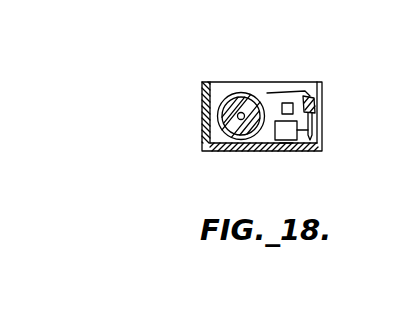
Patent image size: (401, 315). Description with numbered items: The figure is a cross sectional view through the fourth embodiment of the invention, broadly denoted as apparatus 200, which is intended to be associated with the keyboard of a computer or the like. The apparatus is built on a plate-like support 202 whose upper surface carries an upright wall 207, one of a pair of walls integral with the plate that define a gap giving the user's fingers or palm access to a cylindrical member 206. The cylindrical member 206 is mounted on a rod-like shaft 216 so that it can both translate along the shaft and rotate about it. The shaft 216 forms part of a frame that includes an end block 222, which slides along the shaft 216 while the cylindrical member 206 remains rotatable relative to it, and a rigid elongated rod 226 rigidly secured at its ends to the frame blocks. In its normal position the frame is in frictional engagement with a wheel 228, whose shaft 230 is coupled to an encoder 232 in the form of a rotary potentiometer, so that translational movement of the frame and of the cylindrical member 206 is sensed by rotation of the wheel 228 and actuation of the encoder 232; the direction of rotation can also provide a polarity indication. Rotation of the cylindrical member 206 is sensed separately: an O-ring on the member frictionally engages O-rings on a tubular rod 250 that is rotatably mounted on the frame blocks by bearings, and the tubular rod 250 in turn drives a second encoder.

The apparatus 200 is at (188, 155).
The plate-like support 202 is at (213, 152).
The cylindrical member 206 is at (234, 101).
The upright wall 207 is at (205, 119).
The rod-like shaft 216 is at (238, 113).
The end block 222 is at (267, 93).
The rigid elongated rod 226 is at (317, 104).
The wheel 228 is at (298, 130).
The shaft 230 is at (307, 140).
The encoder 232 is at (287, 150).
The tubular rod 250 is at (288, 103).